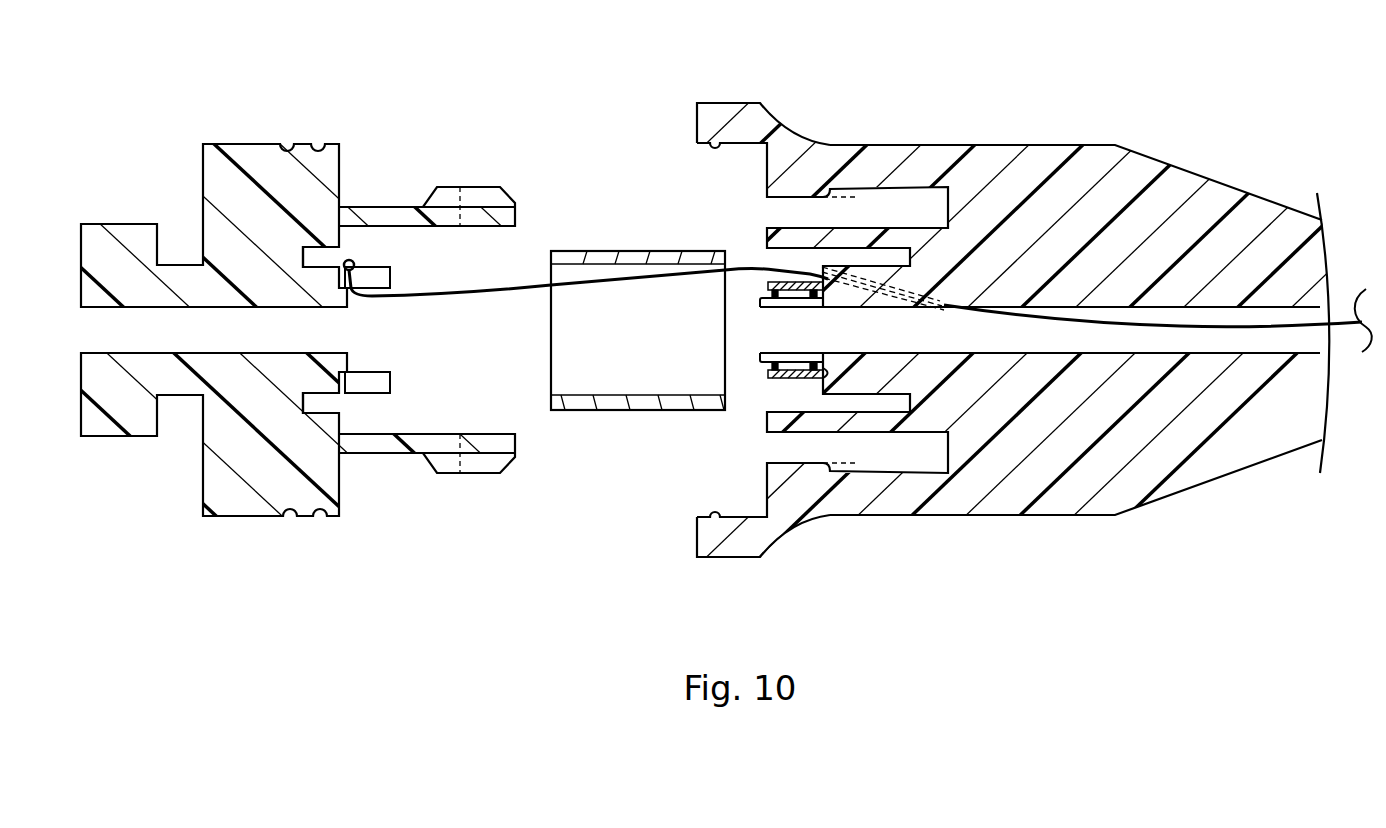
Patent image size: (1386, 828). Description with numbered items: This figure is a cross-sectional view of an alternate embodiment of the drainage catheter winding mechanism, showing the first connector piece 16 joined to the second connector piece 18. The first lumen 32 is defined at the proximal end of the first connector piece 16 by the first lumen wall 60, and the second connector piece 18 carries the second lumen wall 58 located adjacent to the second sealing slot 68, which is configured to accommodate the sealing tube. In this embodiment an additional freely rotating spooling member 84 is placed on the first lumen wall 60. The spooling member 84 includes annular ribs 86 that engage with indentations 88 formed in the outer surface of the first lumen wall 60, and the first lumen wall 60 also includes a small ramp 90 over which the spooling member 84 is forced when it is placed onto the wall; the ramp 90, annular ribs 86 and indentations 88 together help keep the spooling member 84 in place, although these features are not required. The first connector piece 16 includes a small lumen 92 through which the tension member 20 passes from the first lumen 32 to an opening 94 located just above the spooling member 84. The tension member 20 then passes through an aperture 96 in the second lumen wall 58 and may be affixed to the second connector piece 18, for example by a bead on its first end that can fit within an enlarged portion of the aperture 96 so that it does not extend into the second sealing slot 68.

The first connector piece 16 is at (1042, 163).
The second connector piece 18 is at (258, 163).
The tension member 20 is at (1340, 328).
The first lumen 32 is at (997, 328).
The second lumen wall 58 is at (375, 386).
The first lumen wall 60 is at (797, 282).
The second sealing slot 68 is at (340, 407).
The spooling member 84 is at (797, 380).
The annular ribs 86 is at (824, 366).
The indentations 88 is at (767, 299).
The ramp 90 is at (760, 368).
The small lumen 92 is at (893, 300).
The opening 94 is at (802, 280).
The aperture 96 is at (352, 278).